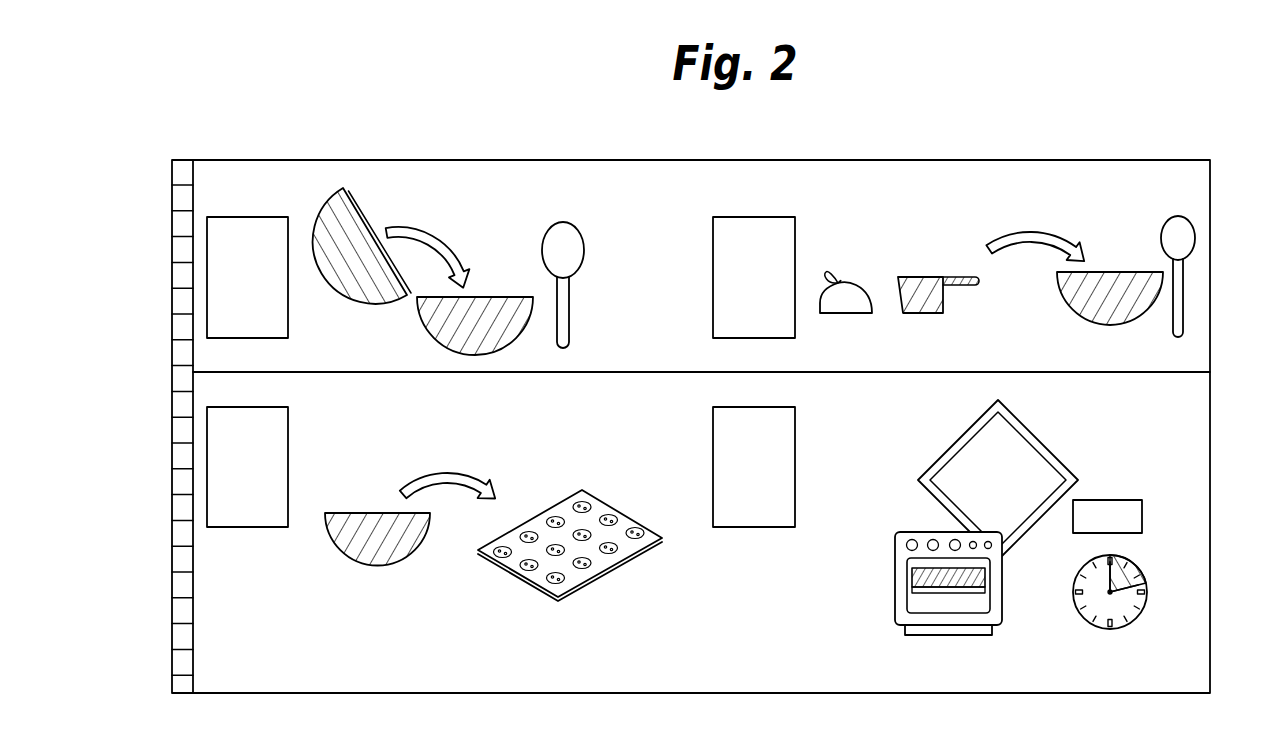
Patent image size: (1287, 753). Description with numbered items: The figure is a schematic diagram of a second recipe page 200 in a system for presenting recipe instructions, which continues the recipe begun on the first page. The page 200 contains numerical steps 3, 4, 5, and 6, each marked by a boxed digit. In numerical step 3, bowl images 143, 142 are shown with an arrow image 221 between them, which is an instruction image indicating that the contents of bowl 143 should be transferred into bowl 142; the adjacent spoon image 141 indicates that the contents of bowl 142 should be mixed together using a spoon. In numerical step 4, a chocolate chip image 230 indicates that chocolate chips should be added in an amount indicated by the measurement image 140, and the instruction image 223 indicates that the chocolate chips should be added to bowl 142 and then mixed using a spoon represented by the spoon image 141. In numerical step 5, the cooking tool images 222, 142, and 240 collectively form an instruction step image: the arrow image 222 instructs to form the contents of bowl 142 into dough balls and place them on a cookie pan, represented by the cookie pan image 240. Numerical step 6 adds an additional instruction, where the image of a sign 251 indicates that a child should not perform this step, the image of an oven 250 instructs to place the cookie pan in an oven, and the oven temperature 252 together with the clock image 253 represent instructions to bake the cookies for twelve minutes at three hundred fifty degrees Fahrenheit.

The second recipe page 200 is at (707, 160).
The numerical step 3 is at (257, 222).
The numerical step 4 is at (783, 220).
The numerical step 5 is at (218, 516).
The numerical step 6 is at (757, 520).
The bowl image 143 is at (331, 193).
The bowl image 142 is at (520, 294).
The spoon image 141 is at (565, 228).
The arrow image 221 is at (446, 228).
The arrow image 222 is at (479, 503).
The instruction image 223 is at (1053, 233).
The chocolate chip image 230 is at (841, 273).
The measurement image 140 is at (936, 270).
The cookie pan image 240 is at (558, 598).
The oven image 250 is at (962, 618).
The sign image 251 is at (1017, 447).
The oven temperature 252 is at (1128, 500).
The clock image 253 is at (1140, 617).